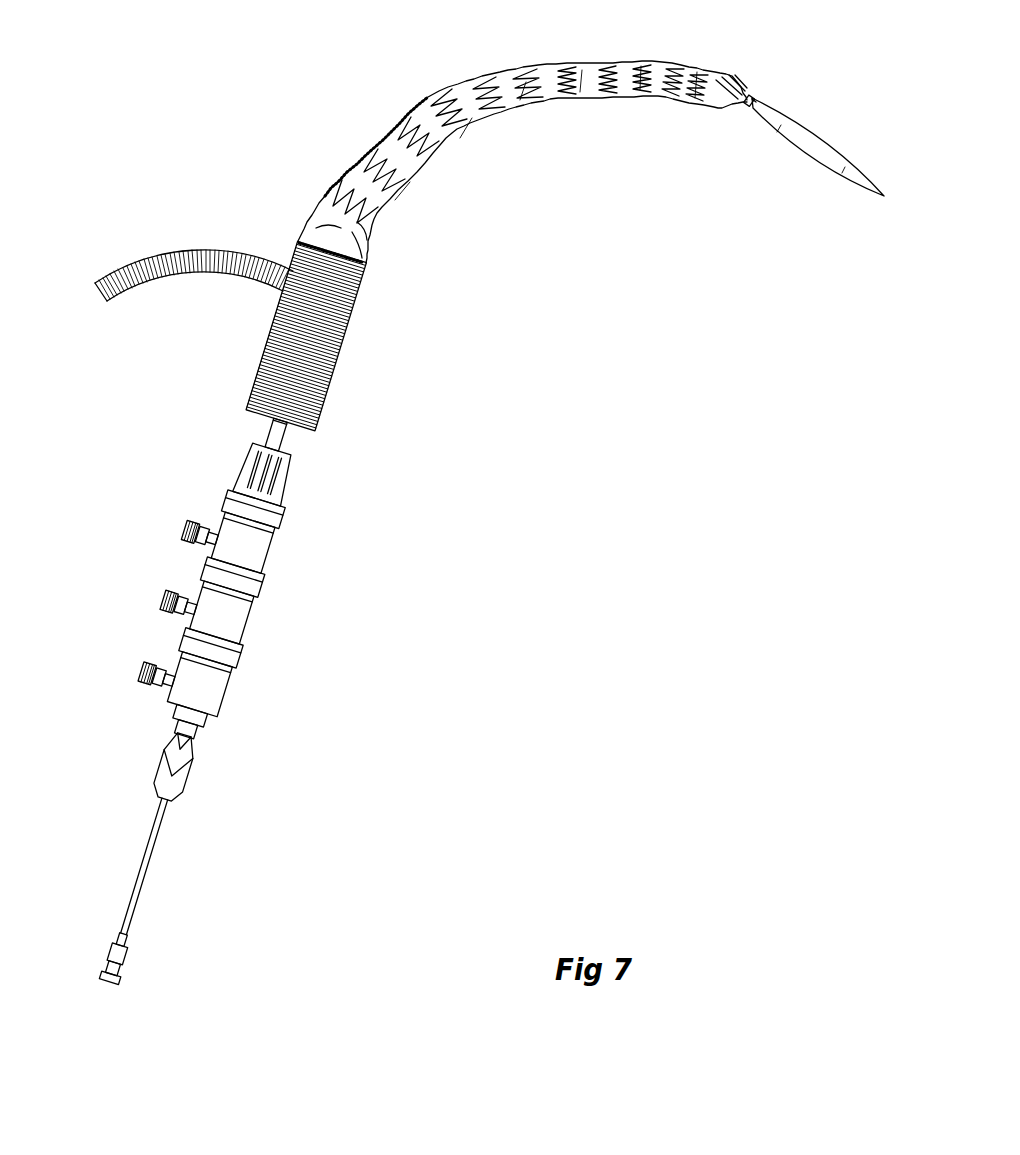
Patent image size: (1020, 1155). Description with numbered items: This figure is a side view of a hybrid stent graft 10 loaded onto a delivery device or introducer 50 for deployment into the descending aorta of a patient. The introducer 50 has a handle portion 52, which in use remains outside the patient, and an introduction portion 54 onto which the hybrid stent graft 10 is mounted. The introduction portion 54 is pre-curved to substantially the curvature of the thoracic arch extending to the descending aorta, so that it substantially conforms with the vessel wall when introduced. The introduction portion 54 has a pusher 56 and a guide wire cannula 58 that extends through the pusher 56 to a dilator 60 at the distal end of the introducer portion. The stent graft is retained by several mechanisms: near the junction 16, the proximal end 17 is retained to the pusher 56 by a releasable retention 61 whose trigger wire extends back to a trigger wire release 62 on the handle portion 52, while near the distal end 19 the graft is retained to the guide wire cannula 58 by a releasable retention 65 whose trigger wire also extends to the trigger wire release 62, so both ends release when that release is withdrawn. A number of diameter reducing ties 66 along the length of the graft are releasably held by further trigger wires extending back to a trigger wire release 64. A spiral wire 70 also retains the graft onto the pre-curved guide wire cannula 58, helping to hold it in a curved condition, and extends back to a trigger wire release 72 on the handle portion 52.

The hybrid stent graft 10 is at (524, 149).
The junction 16 is at (358, 263).
The proximal end 17 is at (337, 227).
The distal end 19 is at (747, 76).
The introducer 50 is at (245, 582).
The handle portion 52 is at (252, 480).
The introduction portion 54 is at (301, 444).
The pusher 56 is at (267, 436).
The guide wire cannula 58 is at (153, 855).
The dilator 60 is at (817, 157).
The releasable retention 61 is at (377, 240).
The trigger wire release 62 is at (251, 549).
The trigger wire release 64 is at (232, 621).
The releasable retention 65 is at (748, 107).
The diameter reducing ties 66 is at (425, 112).
The spiral wire 70 is at (511, 70).
The trigger wire release 72 is at (205, 682).